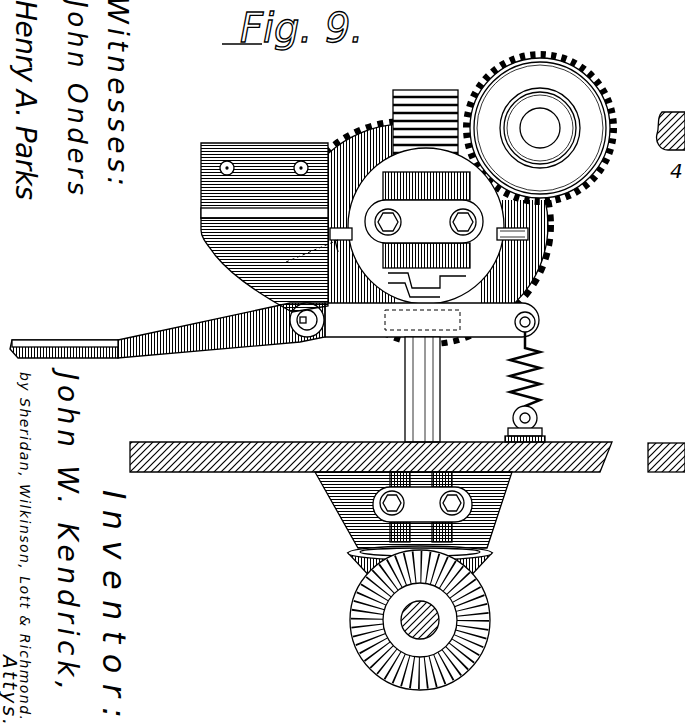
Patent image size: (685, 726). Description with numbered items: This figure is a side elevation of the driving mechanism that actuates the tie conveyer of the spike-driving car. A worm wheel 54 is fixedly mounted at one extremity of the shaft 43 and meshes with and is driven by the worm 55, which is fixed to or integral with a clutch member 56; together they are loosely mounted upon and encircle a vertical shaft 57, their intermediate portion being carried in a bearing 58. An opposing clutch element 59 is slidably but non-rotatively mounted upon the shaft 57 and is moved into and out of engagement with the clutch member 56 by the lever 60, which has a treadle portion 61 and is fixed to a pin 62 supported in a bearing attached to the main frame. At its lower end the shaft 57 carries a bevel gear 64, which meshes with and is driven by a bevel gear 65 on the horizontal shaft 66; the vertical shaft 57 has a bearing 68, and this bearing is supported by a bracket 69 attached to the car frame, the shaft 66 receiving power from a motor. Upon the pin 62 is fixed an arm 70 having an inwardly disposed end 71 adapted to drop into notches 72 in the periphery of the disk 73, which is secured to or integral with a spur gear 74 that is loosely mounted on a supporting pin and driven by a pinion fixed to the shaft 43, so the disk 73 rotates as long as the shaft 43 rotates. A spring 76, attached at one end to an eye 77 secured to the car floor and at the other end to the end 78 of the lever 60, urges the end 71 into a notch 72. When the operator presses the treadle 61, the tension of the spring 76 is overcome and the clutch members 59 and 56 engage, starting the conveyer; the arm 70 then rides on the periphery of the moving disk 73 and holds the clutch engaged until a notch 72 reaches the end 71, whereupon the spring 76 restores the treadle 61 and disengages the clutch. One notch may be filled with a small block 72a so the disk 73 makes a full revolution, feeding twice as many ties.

The shaft 43 is at (547, 127).
The worm wheel 54 is at (566, 64).
The worm 55 is at (427, 100).
The clutch member 56 is at (466, 274).
The vertical shaft 57 is at (415, 392).
The bearing 58 is at (424, 220).
The opposing clutch element 59 is at (390, 345).
The lever 60 is at (228, 343).
The treadle portion 61 is at (86, 346).
The pin 62 is at (305, 325).
The bevel gear 64 is at (492, 566).
The bevel gear 65 is at (478, 612).
The horizontal shaft 66 is at (437, 620).
The bearing 68 is at (458, 527).
The bracket 69 is at (340, 518).
The arm 70 is at (335, 255).
The inwardly disposed end 71 is at (328, 236).
The notches 72 is at (338, 228).
The block 72a is at (529, 234).
The disk 73 is at (478, 285).
The spur gear 74 is at (532, 252).
The spring 76 is at (541, 379).
The eye 77 is at (537, 417).
The end of the lever 78 is at (537, 322).